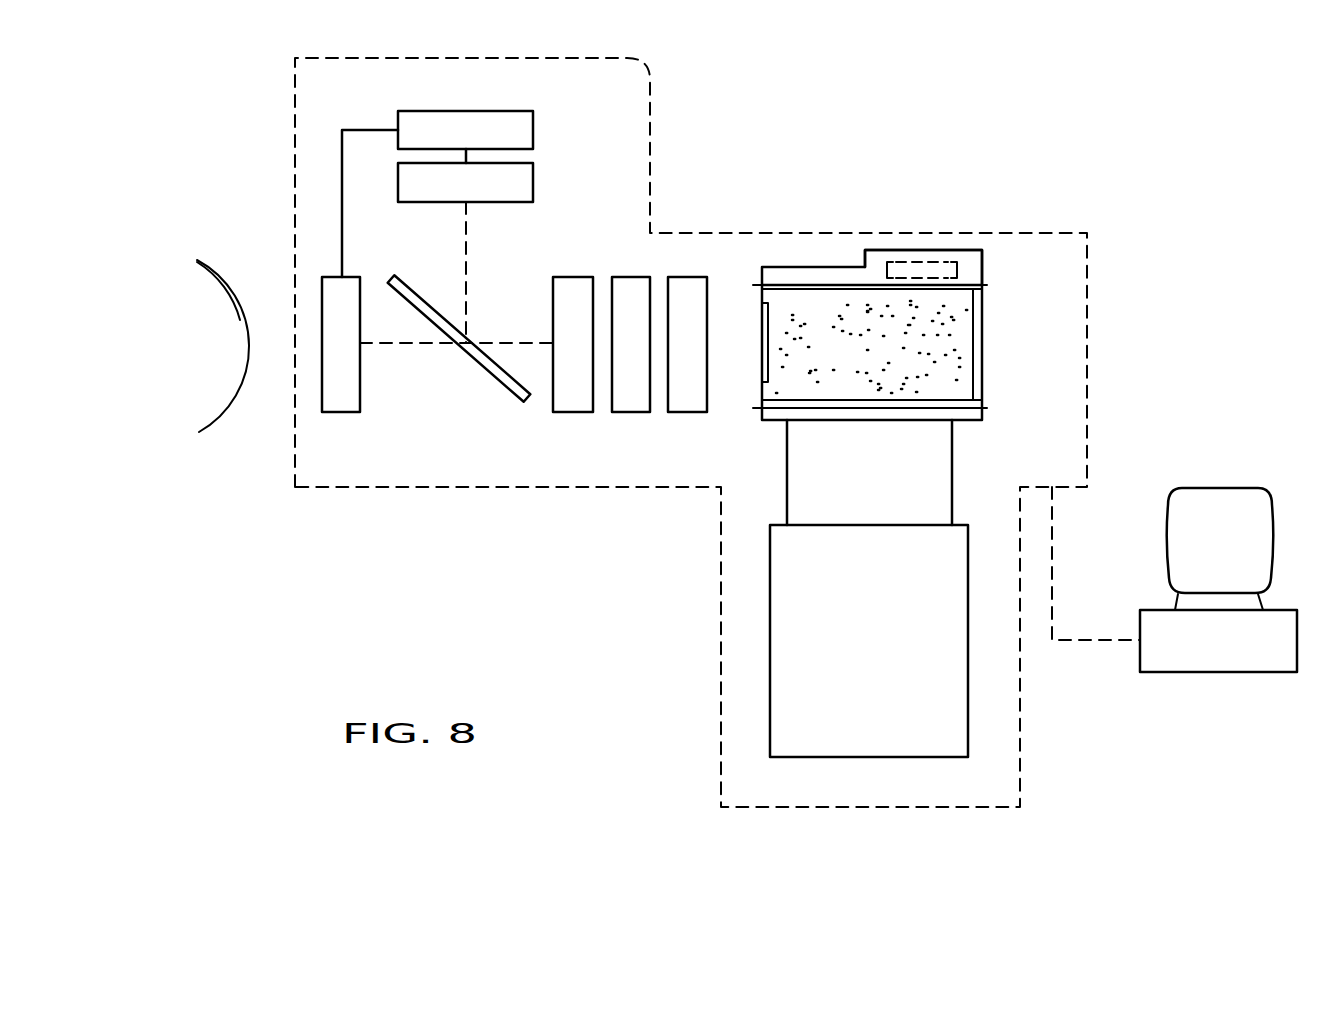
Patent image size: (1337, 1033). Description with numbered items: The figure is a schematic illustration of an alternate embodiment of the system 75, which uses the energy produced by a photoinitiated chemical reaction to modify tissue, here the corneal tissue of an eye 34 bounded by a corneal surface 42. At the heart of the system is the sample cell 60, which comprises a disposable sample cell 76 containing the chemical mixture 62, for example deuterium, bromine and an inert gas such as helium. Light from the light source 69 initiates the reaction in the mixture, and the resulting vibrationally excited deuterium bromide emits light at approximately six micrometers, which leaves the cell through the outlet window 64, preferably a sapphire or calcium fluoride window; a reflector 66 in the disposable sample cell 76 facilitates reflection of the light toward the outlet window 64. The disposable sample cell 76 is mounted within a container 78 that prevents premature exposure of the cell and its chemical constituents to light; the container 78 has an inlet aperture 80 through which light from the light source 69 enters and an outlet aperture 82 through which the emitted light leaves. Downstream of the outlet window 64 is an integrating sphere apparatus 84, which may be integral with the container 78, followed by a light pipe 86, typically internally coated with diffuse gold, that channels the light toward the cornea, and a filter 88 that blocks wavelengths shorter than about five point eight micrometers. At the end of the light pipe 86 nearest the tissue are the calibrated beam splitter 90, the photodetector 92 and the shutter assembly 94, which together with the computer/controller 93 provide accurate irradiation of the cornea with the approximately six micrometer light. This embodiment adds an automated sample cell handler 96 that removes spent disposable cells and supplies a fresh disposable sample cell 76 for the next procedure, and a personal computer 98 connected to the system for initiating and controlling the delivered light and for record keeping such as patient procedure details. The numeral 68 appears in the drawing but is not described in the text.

The eye 34 is at (214, 254).
The corneal surface 42 is at (243, 312).
The sample cell 60 is at (838, 418).
The chemical mixture 62 is at (853, 367).
The outlet window 64 is at (760, 333).
The reflector 66 is at (978, 357).
The cover plate 68 is at (963, 257).
The light source 69 is at (922, 258).
The system 75 is at (465, 488).
The disposable sample cell 76 is at (828, 298).
The container 78 is at (795, 263).
The inlet aperture 80 is at (994, 290).
The outlet aperture 82 is at (754, 416).
The integrating sphere apparatus 84 is at (690, 400).
The light pipe 86 is at (630, 403).
The filter 88 is at (573, 404).
The calibrated beam splitter 90 is at (513, 400).
The photodetector 92 is at (523, 183).
The computer/controller 93 is at (533, 127).
The shutter assembly 94 is at (343, 412).
The automated sample cell handler 96 is at (862, 743).
The personal computer 98 is at (1223, 653).